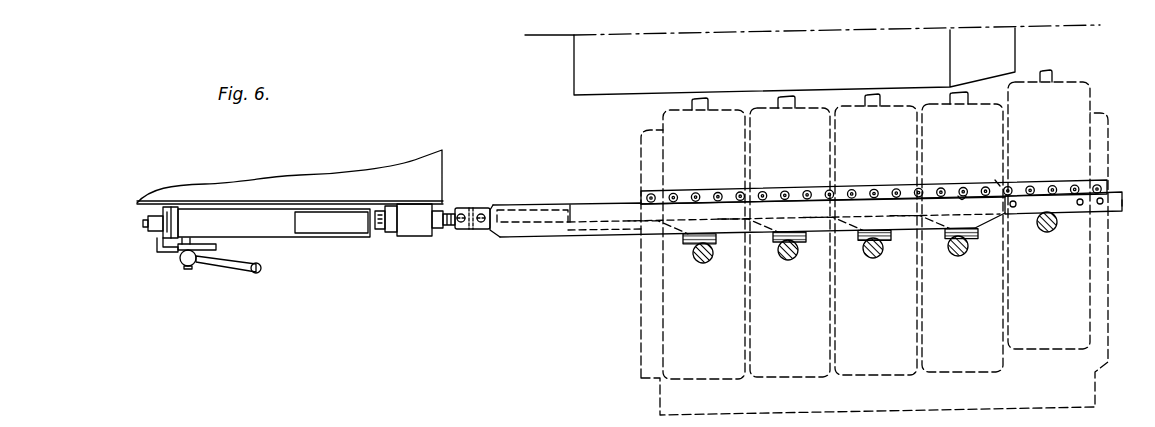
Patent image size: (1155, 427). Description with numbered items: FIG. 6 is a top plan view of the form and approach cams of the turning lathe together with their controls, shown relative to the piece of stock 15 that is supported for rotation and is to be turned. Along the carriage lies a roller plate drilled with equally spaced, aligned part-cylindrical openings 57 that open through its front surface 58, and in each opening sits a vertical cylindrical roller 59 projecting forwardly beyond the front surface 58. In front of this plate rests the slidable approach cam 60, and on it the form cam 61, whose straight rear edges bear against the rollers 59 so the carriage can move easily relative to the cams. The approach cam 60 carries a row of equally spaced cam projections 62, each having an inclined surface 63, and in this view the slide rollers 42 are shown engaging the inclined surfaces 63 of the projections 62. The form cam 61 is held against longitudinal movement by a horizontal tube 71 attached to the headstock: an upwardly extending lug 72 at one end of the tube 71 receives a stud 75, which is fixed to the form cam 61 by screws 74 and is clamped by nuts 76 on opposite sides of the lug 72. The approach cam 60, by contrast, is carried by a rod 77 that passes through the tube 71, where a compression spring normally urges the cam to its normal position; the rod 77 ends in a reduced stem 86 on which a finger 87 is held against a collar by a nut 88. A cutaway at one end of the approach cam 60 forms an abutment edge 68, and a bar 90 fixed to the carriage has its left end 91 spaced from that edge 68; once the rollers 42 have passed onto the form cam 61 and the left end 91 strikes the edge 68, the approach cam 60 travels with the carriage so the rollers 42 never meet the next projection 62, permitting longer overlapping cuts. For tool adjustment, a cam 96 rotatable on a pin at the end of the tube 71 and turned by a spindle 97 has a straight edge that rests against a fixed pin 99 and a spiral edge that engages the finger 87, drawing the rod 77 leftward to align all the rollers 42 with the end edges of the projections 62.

The stock 15 is at (617, 97).
The rollers 42 is at (703, 263).
The openings 57 is at (1052, 188).
The front surface 58 is at (1102, 200).
The rollers 59 is at (1076, 190).
The approach cam 60 is at (590, 230).
The form cam 61 is at (607, 204).
The cam projections 62 is at (975, 240).
The inclined surface 63 is at (955, 242).
The end abutment edge 68 is at (962, 195).
The tube 71 is at (330, 238).
The lug 72 is at (417, 210).
The screws 74 is at (490, 216).
The stud 75 is at (380, 230).
The nuts 76 is at (441, 212).
The rod 77 is at (518, 222).
The reduced stem 86 is at (143, 224).
The finger 87 is at (158, 241).
The nut 88 is at (158, 206).
The bar 90 is at (1124, 213).
The left end 91 is at (1000, 180).
The cam 96 is at (200, 268).
The spindle 97 is at (228, 266).
The fixed pin 99 is at (214, 245).